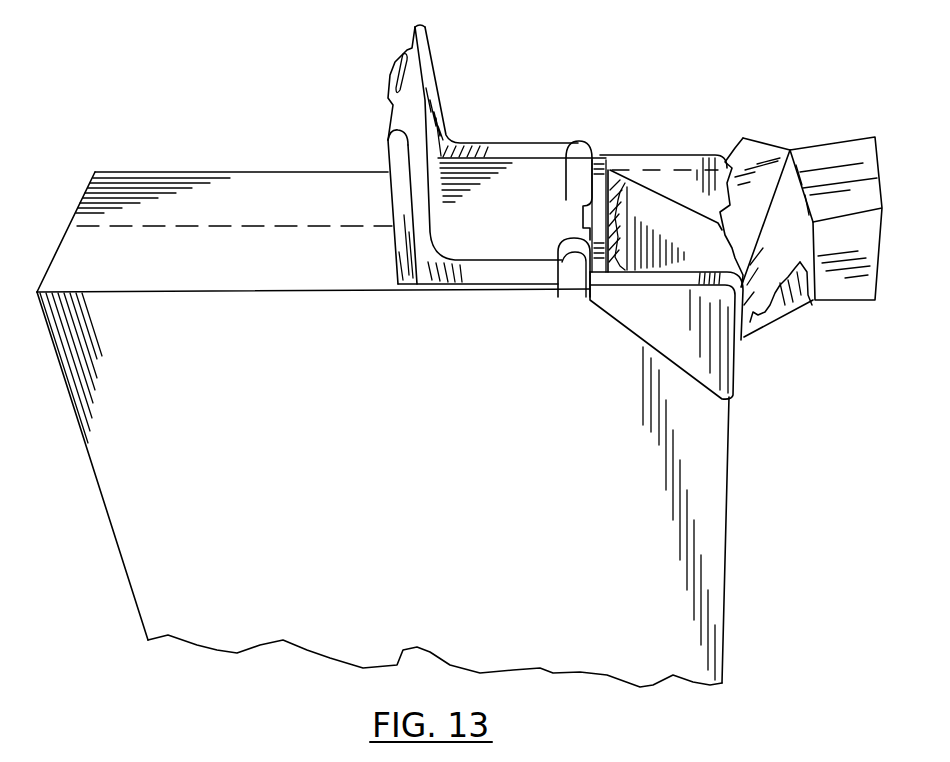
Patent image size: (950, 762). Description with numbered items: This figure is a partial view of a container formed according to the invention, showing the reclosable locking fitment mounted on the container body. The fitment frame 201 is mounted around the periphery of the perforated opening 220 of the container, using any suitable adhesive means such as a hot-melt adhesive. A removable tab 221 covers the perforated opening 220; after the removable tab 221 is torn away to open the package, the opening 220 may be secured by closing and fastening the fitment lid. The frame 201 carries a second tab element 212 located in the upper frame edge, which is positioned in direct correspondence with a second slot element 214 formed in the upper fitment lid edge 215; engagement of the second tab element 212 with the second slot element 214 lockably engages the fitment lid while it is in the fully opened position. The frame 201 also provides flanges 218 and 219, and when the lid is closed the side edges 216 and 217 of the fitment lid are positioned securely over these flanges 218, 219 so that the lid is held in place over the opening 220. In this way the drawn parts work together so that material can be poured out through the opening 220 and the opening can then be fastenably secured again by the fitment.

The frame 201 is at (683, 372).
The second tab element 212 is at (593, 166).
The second slot element 214 is at (578, 143).
The upper fitment lid edge 215 is at (562, 292).
The side edge 216 is at (428, 74).
The side edge 217 is at (407, 184).
The flange 218 is at (657, 280).
The flange 219 is at (672, 162).
The perforated opening 220 is at (634, 198).
The removable tab 221 is at (808, 308).